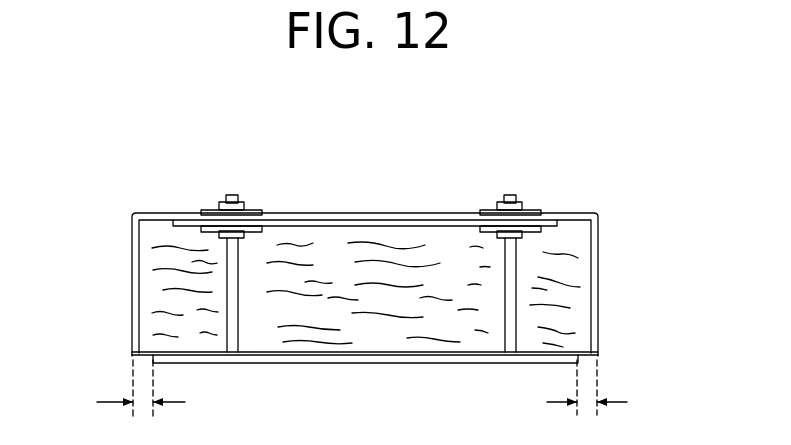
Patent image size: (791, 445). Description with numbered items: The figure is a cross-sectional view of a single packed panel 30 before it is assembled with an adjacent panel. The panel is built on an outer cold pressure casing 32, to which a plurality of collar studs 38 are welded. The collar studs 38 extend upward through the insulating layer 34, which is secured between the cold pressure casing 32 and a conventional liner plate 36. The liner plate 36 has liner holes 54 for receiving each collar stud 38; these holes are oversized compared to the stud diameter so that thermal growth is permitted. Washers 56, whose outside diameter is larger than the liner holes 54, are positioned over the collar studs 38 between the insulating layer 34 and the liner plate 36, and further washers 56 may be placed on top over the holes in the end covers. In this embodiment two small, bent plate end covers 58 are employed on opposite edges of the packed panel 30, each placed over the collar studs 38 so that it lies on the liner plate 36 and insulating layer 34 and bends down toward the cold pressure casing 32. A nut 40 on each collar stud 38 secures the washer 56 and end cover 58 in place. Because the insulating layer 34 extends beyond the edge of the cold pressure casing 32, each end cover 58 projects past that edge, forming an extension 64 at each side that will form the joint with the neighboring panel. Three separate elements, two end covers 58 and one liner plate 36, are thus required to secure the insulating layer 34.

The packed panel 30 is at (541, 170).
The cold pressure casing 32 is at (200, 361).
The insulating layer 34 is at (583, 296).
The liner plate 36 is at (367, 218).
The collar stud 38 is at (236, 332).
The nut 40 is at (243, 200).
The liner hole 54 is at (212, 208).
The washer 56 is at (252, 208).
The end cover 58 is at (131, 216).
The extension 64 is at (358, 392).